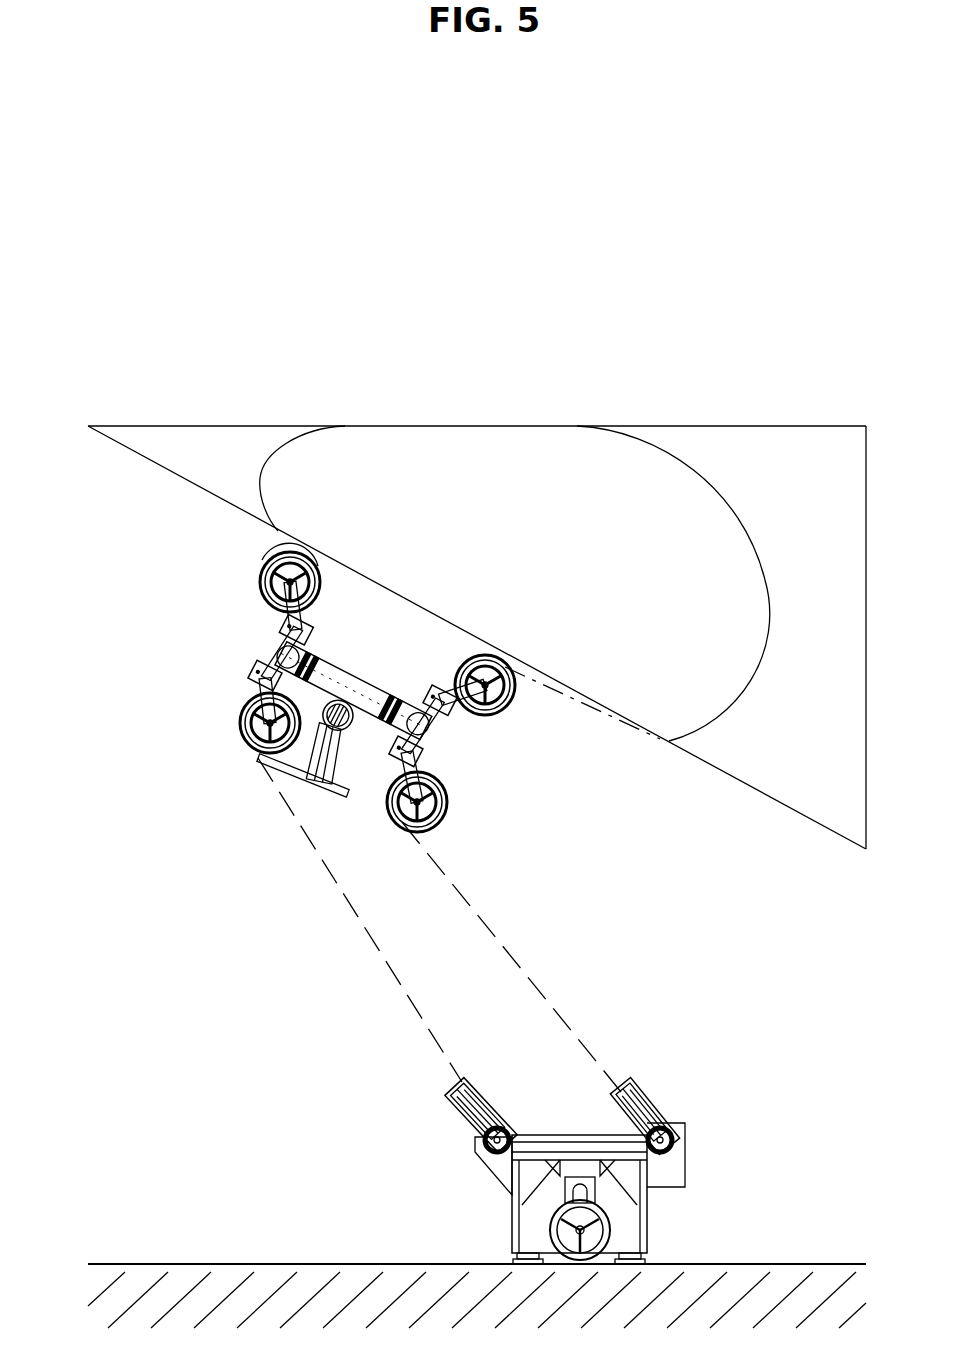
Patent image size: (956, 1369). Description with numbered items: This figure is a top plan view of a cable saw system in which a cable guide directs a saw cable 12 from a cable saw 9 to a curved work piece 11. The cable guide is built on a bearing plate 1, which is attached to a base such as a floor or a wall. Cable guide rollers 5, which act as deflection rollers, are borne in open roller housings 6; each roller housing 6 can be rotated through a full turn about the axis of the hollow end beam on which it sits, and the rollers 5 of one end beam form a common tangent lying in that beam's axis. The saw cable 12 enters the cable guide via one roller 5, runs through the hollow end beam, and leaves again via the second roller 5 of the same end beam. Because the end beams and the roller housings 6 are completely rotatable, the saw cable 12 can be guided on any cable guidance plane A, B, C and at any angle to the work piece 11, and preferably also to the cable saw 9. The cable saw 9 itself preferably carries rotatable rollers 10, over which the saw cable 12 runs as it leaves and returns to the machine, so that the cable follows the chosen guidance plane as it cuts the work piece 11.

The bearing plate 1 is at (299, 727).
The cable guide rollers 5 is at (287, 660).
The roller housing 6 is at (209, 716).
The cable saw 9 is at (637, 1158).
The rotatable rollers 10 is at (650, 1100).
The work piece 11 is at (477, 578).
The saw cable 12 is at (511, 941).
The cable guidance plane A is at (518, 965).
The cable guidance plane B is at (183, 565).
The cable guidance plane C is at (196, 686).